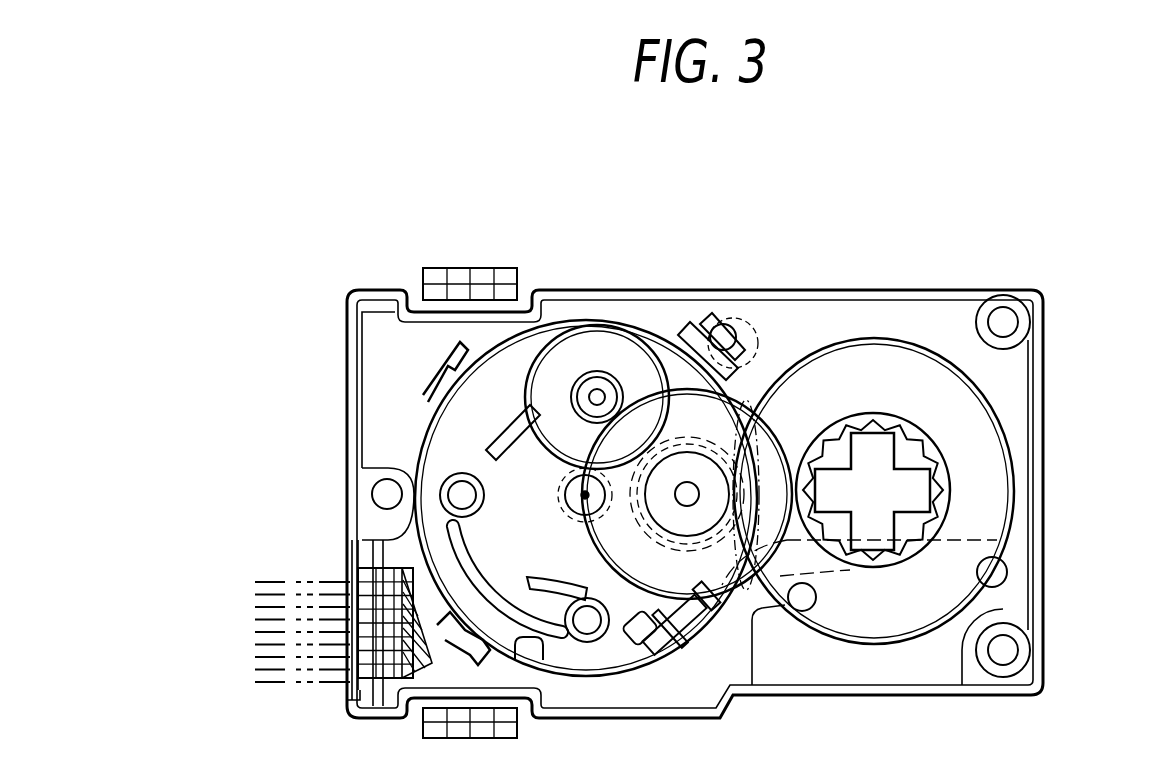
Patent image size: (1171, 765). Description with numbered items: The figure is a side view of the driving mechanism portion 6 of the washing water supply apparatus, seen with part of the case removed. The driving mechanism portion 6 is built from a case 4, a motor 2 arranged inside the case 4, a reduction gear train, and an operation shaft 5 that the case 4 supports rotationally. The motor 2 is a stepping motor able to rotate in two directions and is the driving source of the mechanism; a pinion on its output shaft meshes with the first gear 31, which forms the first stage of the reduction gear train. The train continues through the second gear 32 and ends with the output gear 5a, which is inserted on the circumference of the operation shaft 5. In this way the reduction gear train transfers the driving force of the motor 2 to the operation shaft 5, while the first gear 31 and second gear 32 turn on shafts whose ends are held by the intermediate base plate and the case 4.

The motor 2 is at (457, 445).
The case 4 is at (933, 288).
The operation shaft 5 is at (868, 465).
The output gear 5a is at (980, 482).
The driving mechanism portion 6 is at (870, 201).
The first gear 31 is at (603, 355).
The second gear 32 is at (650, 563).